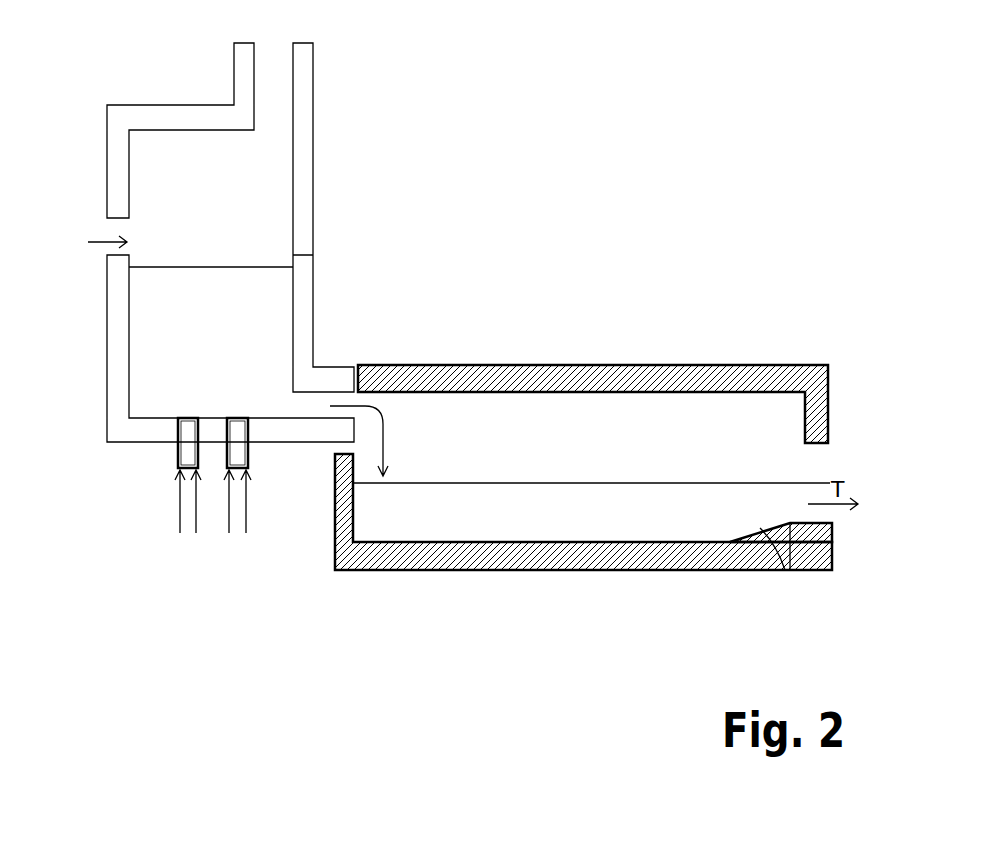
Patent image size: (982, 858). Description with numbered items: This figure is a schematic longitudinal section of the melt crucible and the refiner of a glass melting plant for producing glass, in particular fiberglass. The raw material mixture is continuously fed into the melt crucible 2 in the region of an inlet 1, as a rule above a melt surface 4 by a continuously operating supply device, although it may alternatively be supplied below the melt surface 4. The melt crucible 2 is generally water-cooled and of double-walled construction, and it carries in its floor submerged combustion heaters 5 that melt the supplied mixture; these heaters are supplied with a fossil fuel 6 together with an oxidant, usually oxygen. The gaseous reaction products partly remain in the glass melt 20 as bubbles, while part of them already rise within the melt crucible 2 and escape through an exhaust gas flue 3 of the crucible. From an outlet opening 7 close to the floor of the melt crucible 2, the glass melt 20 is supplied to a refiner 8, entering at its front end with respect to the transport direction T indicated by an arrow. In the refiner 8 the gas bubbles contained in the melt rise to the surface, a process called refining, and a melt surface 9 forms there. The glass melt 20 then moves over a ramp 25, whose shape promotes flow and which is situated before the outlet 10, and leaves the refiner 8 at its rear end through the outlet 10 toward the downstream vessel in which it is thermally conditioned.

The inlet 1 is at (89, 242).
The melt crucible 2 is at (305, 200).
The exhaust gas flue 3 is at (192, 129).
The melt surface 4 is at (211, 252).
The submerged combustion heaters 5 is at (188, 445).
The fossil fuel 6 is at (213, 495).
The outlet opening 7 is at (331, 408).
The refiner 8 is at (487, 392).
The melt surface 9 is at (591, 471).
The outlet 10 is at (610, 545).
The glass melt 20 is at (492, 513).
The ramp 25 is at (790, 570).